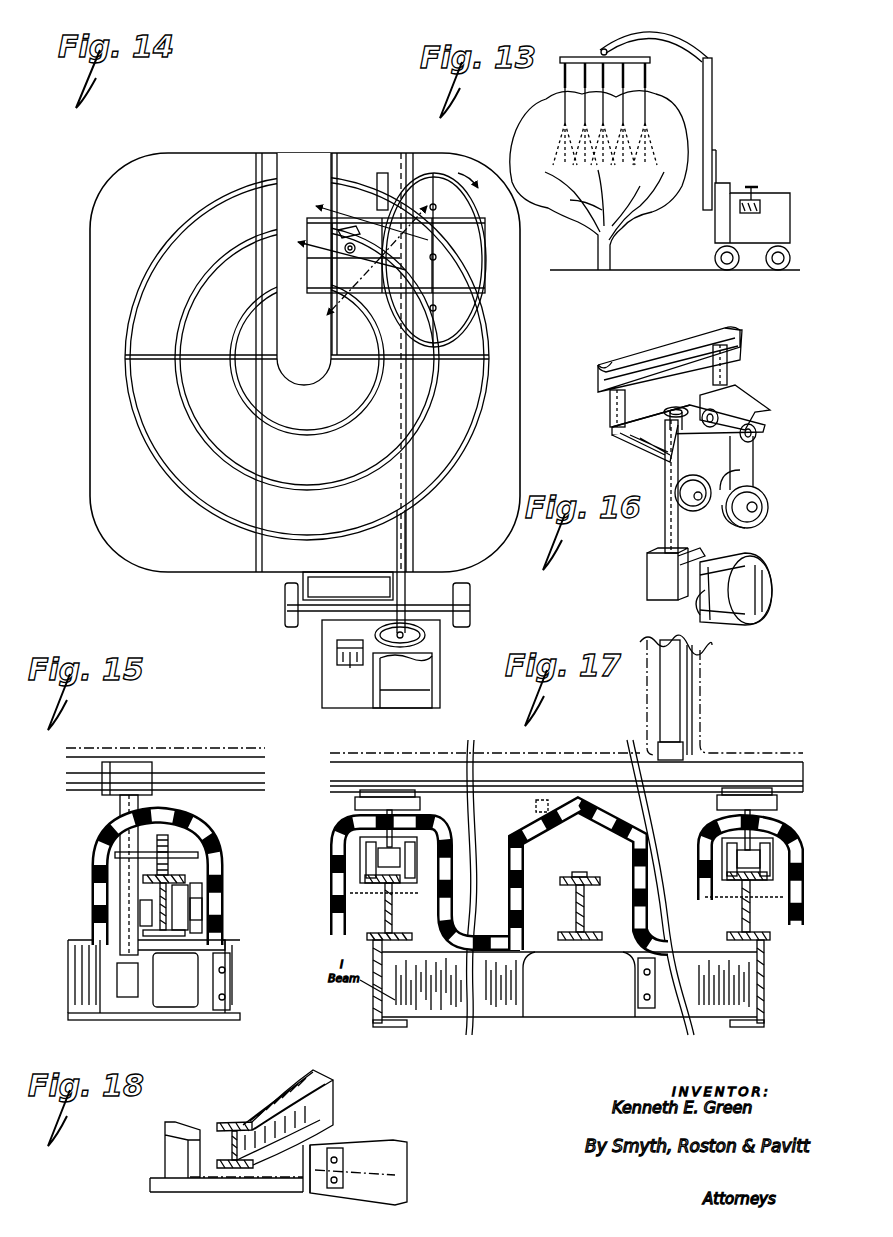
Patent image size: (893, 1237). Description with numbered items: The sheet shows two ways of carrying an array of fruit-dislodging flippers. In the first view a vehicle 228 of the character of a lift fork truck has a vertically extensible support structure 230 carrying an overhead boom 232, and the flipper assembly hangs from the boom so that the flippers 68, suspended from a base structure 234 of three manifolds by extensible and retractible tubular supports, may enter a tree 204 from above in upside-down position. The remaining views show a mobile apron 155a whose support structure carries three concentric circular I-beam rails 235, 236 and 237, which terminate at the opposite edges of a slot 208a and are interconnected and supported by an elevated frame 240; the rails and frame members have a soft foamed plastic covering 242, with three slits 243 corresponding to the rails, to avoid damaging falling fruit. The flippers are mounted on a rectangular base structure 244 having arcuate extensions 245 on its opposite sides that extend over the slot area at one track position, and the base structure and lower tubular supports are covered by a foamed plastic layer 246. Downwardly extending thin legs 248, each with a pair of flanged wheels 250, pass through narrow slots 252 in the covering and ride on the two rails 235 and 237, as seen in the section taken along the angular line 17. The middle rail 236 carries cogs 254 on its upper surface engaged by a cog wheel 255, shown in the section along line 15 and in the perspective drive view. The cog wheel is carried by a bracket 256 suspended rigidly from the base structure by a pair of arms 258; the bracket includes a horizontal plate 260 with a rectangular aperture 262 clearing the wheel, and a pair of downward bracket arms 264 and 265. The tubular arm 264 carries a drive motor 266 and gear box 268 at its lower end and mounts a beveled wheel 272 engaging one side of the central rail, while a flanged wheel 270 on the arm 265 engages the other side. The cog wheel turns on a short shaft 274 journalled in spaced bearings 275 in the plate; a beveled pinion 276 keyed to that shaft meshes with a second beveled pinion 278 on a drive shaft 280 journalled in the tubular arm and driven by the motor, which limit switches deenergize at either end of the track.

In FIG. 13, the overhead boom 232 is at (672, 28).
In FIG. 13, the base structure 234 is at (575, 55).
In FIG. 13, the vertically extensible support structure 230 is at (714, 110).
In FIG. 13, the flippers 68 is at (645, 160).
In FIG. 13, the tree 204 is at (582, 233).
In FIG. 13, the vehicle 228 is at (714, 236).
In FIG. 14, the slot 208a is at (300, 153).
In FIG. 14, the arcuate extensions 245 is at (458, 170).
In FIG. 14, the base structure 244 is at (482, 272).
In FIG. 17, the base structure 244 is at (440, 770).
In FIG. 14, the circular I-beam rail 237 is at (244, 398).
In FIG. 17, the circular I-beam rail 237 is at (768, 940).
In FIG. 14, the middle rail 236 is at (220, 450).
In FIG. 15, the middle rail 236 is at (185, 875).
In FIG. 17, the middle rail 236 is at (586, 920).
In FIG. 18, the middle rail 236 is at (318, 1092).
In FIG. 14, the circular I-beam rail 235 is at (186, 490).
In FIG. 17, the circular I-beam rail 235 is at (372, 925).
In FIG. 14, the apron 155a is at (152, 576).
In FIG. 14, the section line 15 is at (354, 228).
In FIG. 14, the angular section line 17 is at (398, 272).
In FIG. 16, the arms 258 is at (728, 360).
In FIG. 17, the arms 258 is at (536, 806).
In FIG. 16, the bracket 256 is at (740, 388).
In FIG. 16, the rectangular aperture 262 is at (718, 416).
In FIG. 16, the horizontal plate 260 is at (755, 428).
In FIG. 16, the tubular bracket arm 264 is at (664, 462).
In FIG. 15, the tubular bracket arm 264 is at (118, 910).
In FIG. 16, the spaced bearings 275 is at (700, 432).
In FIG. 16, the bracket arm 265 is at (752, 463).
In FIG. 15, the bracket arm 265 is at (200, 895).
In FIG. 16, the drive motor 266 is at (738, 560).
In FIG. 15, the drive motor 266 is at (168, 1008).
In FIG. 16, the gear box 268 is at (646, 578).
In FIG. 15, the gear box 268 is at (122, 998).
In FIG. 15, the beveled pinion 276 is at (160, 835).
In FIG. 15, the cog wheel 255 is at (180, 812).
In FIG. 15, the short shaft 274 is at (185, 852).
In FIG. 15, the flanged wheel 270 is at (185, 925).
In FIG. 15, the second beveled pinion 278 is at (118, 855).
In FIG. 15, the beveled wheel 272 is at (110, 962).
In FIG. 15, the drive shaft 280 is at (95, 990).
In FIG. 17, the slits 243 is at (420, 804).
In FIG. 17, the legs 248 is at (392, 840).
In FIG. 17, the narrow slots 252 is at (705, 832).
In FIG. 17, the flanged wheels 250 is at (410, 860).
In FIG. 17, the cogs 254 is at (580, 872).
In FIG. 18, the cogs 254 is at (270, 1088).
In FIG. 17, the foamed plastic covering 242 is at (512, 858).
In FIG. 17, the elevated frame 240 is at (510, 1020).
In FIG. 18, the elevated frame 240 is at (372, 1135).
In FIG. 17, the foamed plastic layer 246 is at (528, 762).